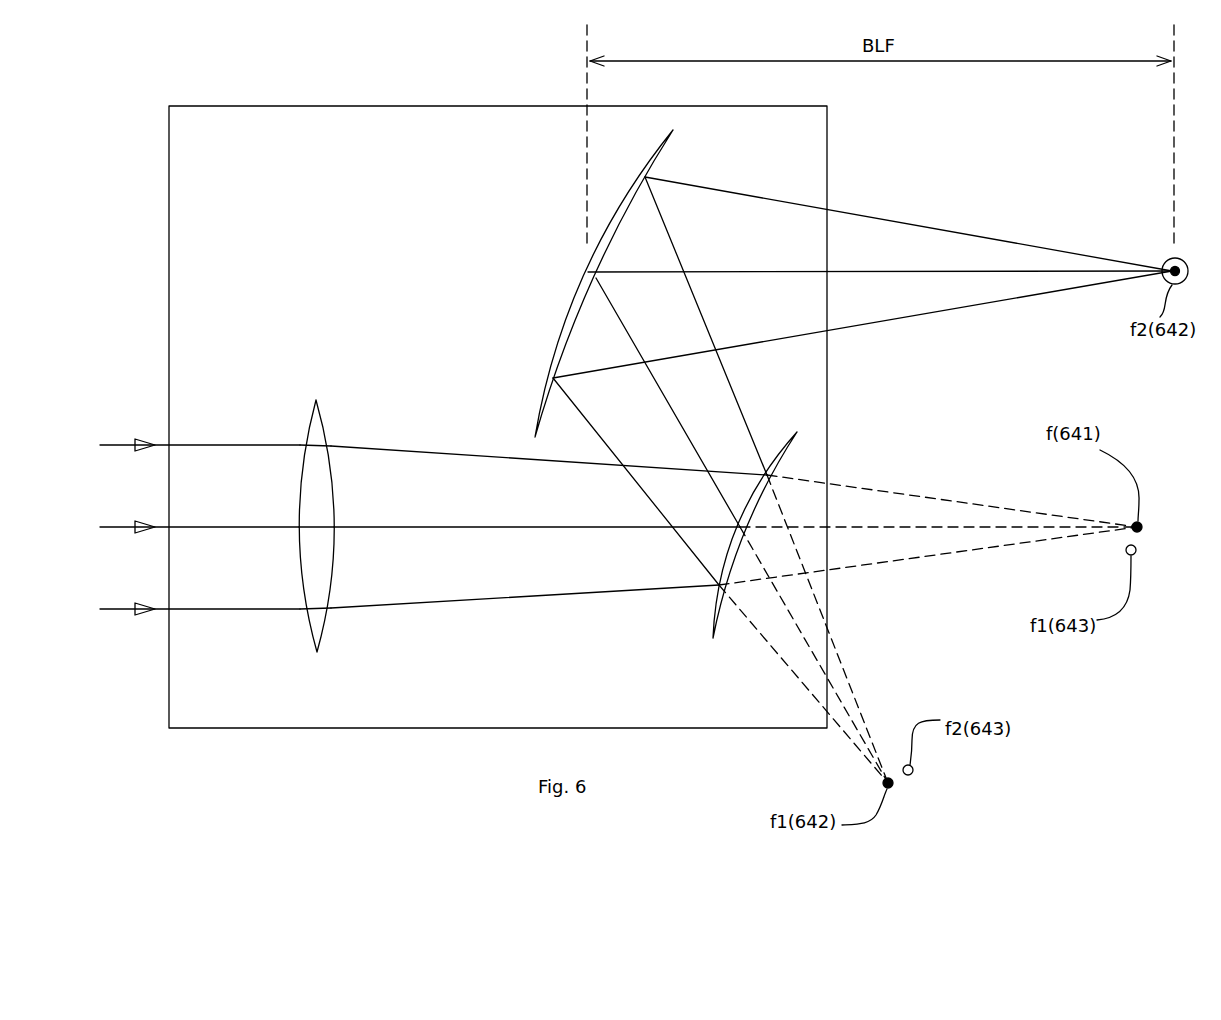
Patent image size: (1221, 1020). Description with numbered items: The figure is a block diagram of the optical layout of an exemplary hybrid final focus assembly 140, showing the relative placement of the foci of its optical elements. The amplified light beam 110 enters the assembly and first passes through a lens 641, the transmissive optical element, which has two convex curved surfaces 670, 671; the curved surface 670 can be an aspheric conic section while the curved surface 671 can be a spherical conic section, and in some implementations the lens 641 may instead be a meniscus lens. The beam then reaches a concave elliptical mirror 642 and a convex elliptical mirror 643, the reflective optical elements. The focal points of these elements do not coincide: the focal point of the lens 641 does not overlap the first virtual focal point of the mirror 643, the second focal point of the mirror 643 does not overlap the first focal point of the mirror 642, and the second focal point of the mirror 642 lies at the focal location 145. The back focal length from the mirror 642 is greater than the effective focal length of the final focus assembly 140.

The final focus assembly 140 is at (298, 106).
The amplified light beam 110 is at (218, 610).
The lens 641 is at (318, 655).
The concave elliptical mirror 642 is at (583, 282).
The convex elliptical mirror 643 is at (716, 615).
The curved surface 670 is at (299, 497).
The curved surface 671 is at (334, 470).
The focal location 145 is at (1167, 258).